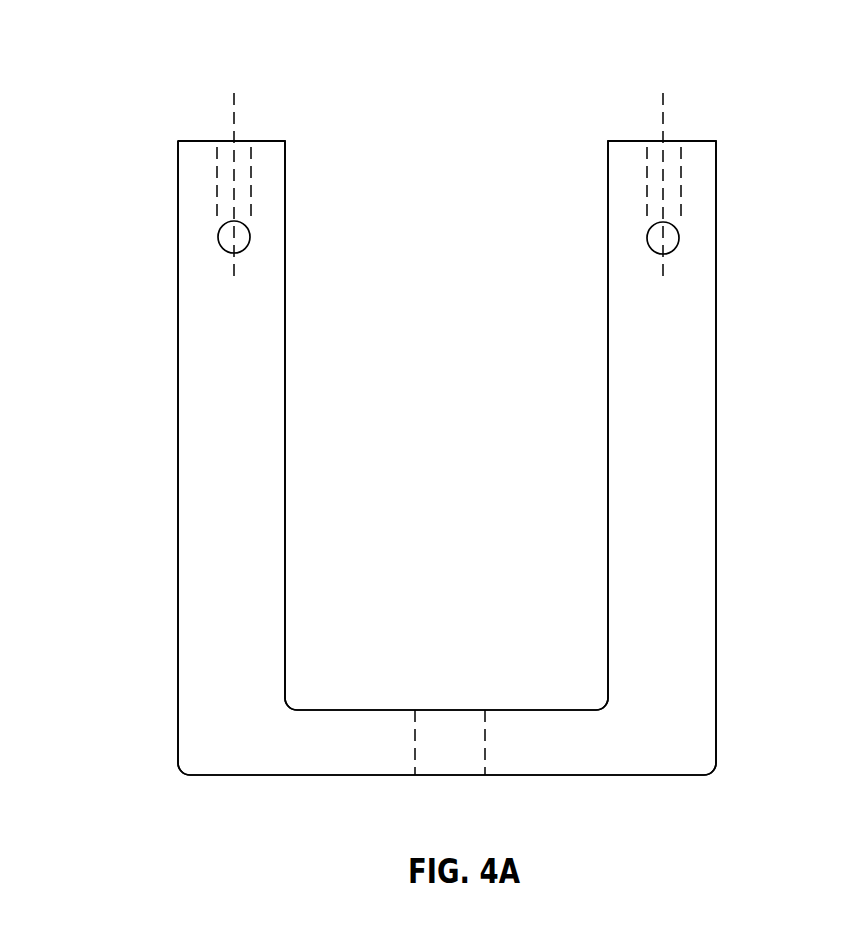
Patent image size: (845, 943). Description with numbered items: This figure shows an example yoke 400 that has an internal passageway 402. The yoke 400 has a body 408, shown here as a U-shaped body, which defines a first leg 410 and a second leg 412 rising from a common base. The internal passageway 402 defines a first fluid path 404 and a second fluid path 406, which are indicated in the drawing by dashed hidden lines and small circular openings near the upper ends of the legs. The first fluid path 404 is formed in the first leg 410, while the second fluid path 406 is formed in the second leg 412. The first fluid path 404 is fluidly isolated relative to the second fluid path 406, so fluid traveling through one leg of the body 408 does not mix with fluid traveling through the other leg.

The yoke 400 is at (742, 92).
The internal passageway 402 is at (192, 198).
The first fluid path 404 is at (662, 233).
The second fluid path 406 is at (233, 243).
The body 408 is at (204, 705).
The first leg 410 is at (627, 141).
The second leg 412 is at (199, 141).